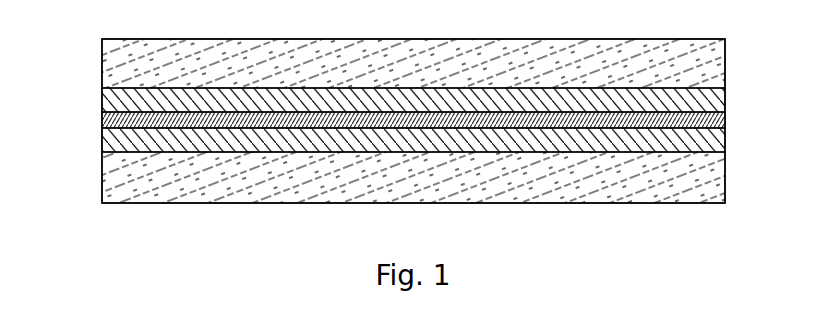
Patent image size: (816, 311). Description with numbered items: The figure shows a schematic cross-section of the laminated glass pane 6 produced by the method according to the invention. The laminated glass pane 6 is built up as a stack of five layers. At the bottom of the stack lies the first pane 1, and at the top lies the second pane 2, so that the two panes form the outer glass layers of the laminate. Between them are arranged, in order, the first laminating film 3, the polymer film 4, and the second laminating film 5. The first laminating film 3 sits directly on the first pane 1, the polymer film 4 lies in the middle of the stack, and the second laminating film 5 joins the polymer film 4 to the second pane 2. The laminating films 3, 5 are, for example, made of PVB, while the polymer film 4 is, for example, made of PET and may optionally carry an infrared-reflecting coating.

The first pane 1 is at (102, 173).
The second pane 2 is at (102, 63).
The first laminating film 3 is at (102, 140).
The polymer film 4 is at (102, 120).
The second laminating film 5 is at (102, 100).
The laminated glass pane 6 is at (738, 39).